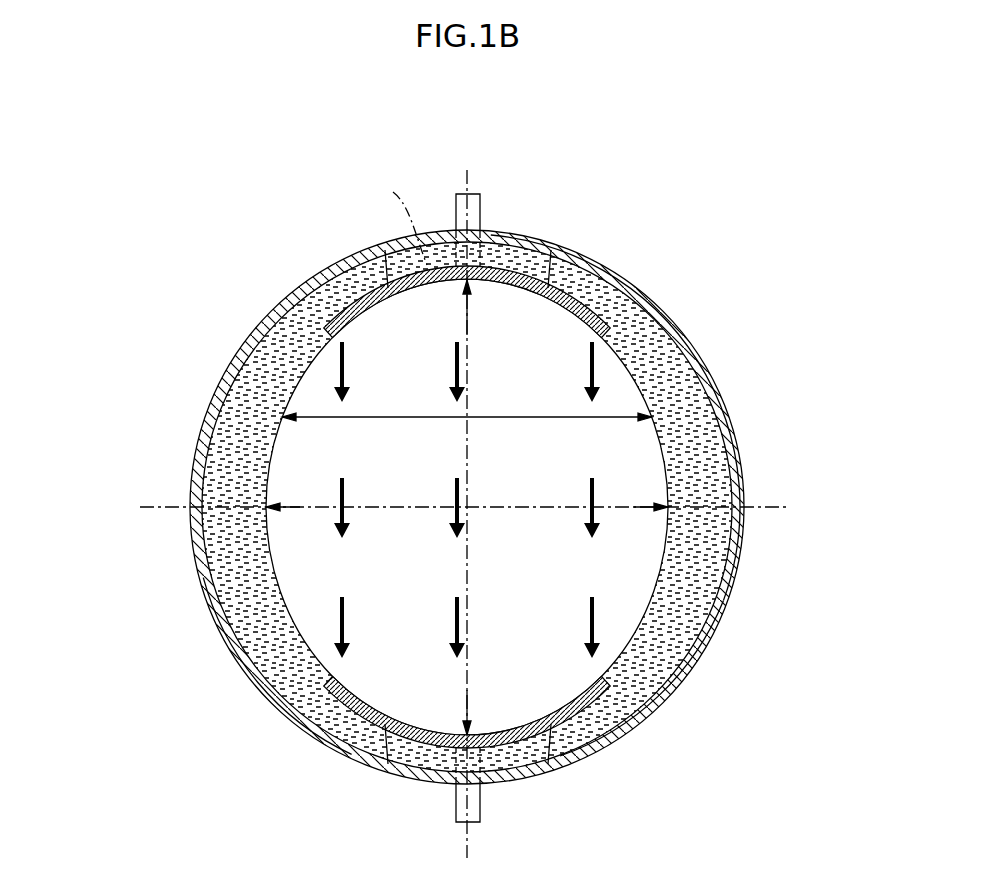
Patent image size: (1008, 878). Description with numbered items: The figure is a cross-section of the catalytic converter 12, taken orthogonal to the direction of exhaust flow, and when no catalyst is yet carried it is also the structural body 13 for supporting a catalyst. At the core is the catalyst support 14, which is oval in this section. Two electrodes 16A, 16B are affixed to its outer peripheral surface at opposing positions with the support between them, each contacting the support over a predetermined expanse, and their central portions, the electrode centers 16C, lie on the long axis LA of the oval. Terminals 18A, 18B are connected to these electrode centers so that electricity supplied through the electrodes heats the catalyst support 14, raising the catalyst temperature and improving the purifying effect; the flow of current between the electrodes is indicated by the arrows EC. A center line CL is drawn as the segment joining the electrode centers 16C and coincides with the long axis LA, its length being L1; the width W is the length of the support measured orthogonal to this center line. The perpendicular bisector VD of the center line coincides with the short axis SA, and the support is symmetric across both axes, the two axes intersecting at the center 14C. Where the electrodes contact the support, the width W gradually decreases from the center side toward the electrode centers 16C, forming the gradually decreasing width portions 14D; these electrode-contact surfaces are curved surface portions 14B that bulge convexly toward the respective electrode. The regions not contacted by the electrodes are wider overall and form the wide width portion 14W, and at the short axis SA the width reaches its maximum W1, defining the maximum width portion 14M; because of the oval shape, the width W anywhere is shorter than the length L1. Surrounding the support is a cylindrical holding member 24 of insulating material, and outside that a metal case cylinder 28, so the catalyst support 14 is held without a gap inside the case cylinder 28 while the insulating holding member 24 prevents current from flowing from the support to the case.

The catalytic converter 12 is at (474, 482).
The structural body for supporting a catalyst 13 is at (626, 217).
The catalyst support 14 is at (292, 620).
The curved surface portion 14B is at (323, 768).
The center 14C is at (468, 507).
The gradually decreasing width portion 14D is at (404, 510).
The maximum width portion 14M is at (458, 507).
The wide width portion 14W is at (643, 397).
The electrode 16A is at (593, 276).
The electrode 16B is at (570, 723).
The electrode center 16C is at (498, 289).
The terminal 18A is at (455, 202).
The terminal 18B is at (455, 815).
The holding member 24 is at (284, 344).
The case cylinder 28 is at (278, 707).
The long axis LA is at (369, 221).
The length of the center line L1 is at (410, 228).
The center line CL is at (466, 566).
The perpendicular bisector VD is at (155, 506).
The short axis SA is at (467, 564).
The maximum width W1 is at (540, 512).
The width W is at (492, 412).
The arrows indicating current flow EC is at (455, 376).